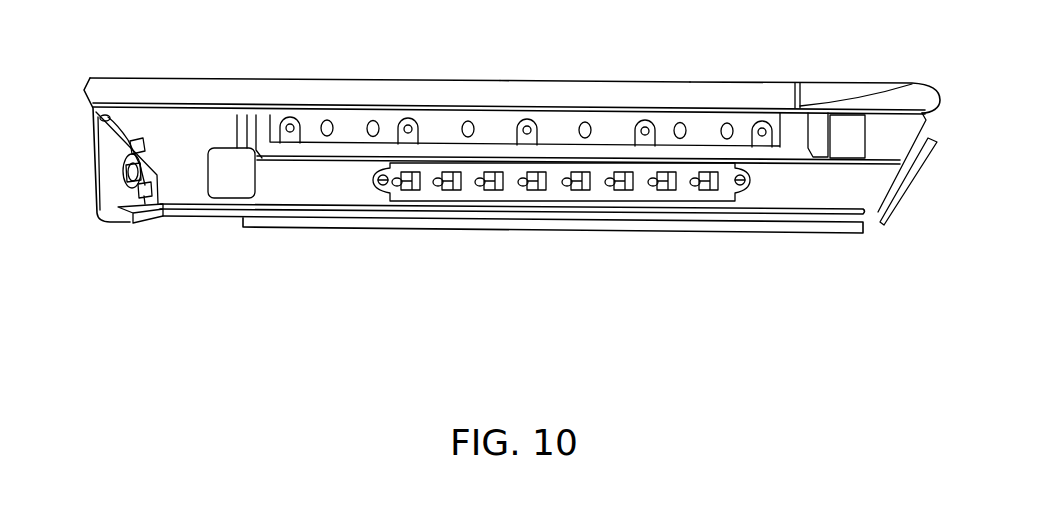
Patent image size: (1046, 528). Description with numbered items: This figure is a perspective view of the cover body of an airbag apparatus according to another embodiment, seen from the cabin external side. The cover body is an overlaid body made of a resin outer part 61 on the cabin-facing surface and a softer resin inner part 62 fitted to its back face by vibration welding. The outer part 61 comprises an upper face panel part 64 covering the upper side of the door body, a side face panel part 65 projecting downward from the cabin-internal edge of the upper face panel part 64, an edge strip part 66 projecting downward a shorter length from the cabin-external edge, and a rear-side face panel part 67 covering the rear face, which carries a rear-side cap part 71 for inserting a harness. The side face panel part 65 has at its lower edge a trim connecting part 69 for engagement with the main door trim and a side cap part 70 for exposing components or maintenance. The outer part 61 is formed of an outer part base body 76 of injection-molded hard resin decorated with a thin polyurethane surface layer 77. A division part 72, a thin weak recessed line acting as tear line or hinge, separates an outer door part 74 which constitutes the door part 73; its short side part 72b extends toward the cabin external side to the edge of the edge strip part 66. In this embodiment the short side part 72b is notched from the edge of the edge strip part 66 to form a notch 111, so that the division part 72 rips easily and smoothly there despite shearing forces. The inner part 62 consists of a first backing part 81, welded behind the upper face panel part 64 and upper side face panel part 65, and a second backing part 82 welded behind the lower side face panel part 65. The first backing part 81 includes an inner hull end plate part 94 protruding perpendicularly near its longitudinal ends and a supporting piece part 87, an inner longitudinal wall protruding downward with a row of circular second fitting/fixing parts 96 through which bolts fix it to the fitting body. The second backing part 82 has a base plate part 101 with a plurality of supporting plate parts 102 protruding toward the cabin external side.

The outer part 61 is at (184, 80).
The inner part 62 is at (500, 123).
The upper face panel part 64 is at (313, 83).
The side face panel part 65 is at (310, 194).
The edge strip part 66 is at (284, 92).
The rear-side face panel part 67 is at (105, 163).
The trim connecting part 69 is at (340, 226).
The side cap part 70 is at (224, 198).
The rear-side cap part 71 is at (130, 187).
The division part 72 is at (797, 107).
The short side part 72b is at (825, 95).
The door part 73 is at (652, 86).
The outer door part 74 is at (703, 80).
The outer part base body 76 is at (163, 122).
The surface layer 77 is at (364, 92).
The first backing part 81 is at (443, 120).
The second backing part 82 is at (520, 192).
The supporting piece part 87 is at (555, 120).
The inner hull end plate part 94 is at (241, 117).
The second fitting/fixing part 96 is at (408, 120).
The base plate part 101 is at (600, 192).
The supporting plate part 102 is at (442, 190).
The notch 111 is at (825, 103).